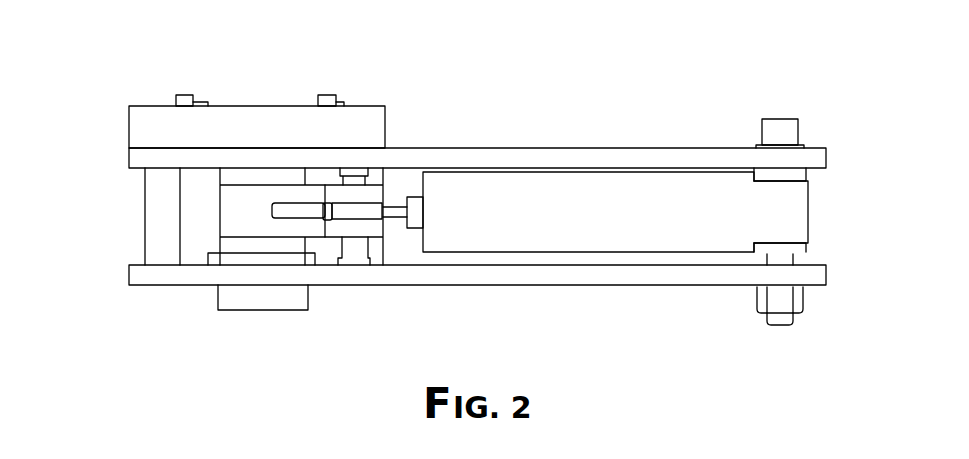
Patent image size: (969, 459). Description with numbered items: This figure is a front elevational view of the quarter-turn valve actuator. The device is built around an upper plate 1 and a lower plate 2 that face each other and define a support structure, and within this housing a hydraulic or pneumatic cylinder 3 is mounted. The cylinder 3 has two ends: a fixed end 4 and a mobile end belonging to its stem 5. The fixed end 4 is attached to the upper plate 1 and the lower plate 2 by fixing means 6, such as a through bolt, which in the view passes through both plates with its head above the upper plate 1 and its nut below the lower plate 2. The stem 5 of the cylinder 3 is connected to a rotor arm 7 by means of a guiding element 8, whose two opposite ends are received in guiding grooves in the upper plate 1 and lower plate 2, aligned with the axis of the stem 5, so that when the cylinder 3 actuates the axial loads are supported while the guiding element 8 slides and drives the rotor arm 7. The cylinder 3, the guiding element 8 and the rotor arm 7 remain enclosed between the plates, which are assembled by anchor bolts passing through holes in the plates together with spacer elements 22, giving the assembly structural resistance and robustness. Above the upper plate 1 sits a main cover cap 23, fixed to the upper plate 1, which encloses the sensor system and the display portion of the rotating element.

The upper plate 1 is at (137, 161).
The lower plate 2 is at (137, 278).
The hydraulic or pneumatic cylinder 3 is at (580, 187).
The fixed end 4 is at (795, 200).
The stem 5 is at (417, 205).
The fixing means 6 is at (783, 128).
The rotor arm 7 is at (283, 195).
The guiding element 8 is at (356, 173).
The spacer elements 22 is at (155, 217).
The main cover cap 23 is at (152, 121).